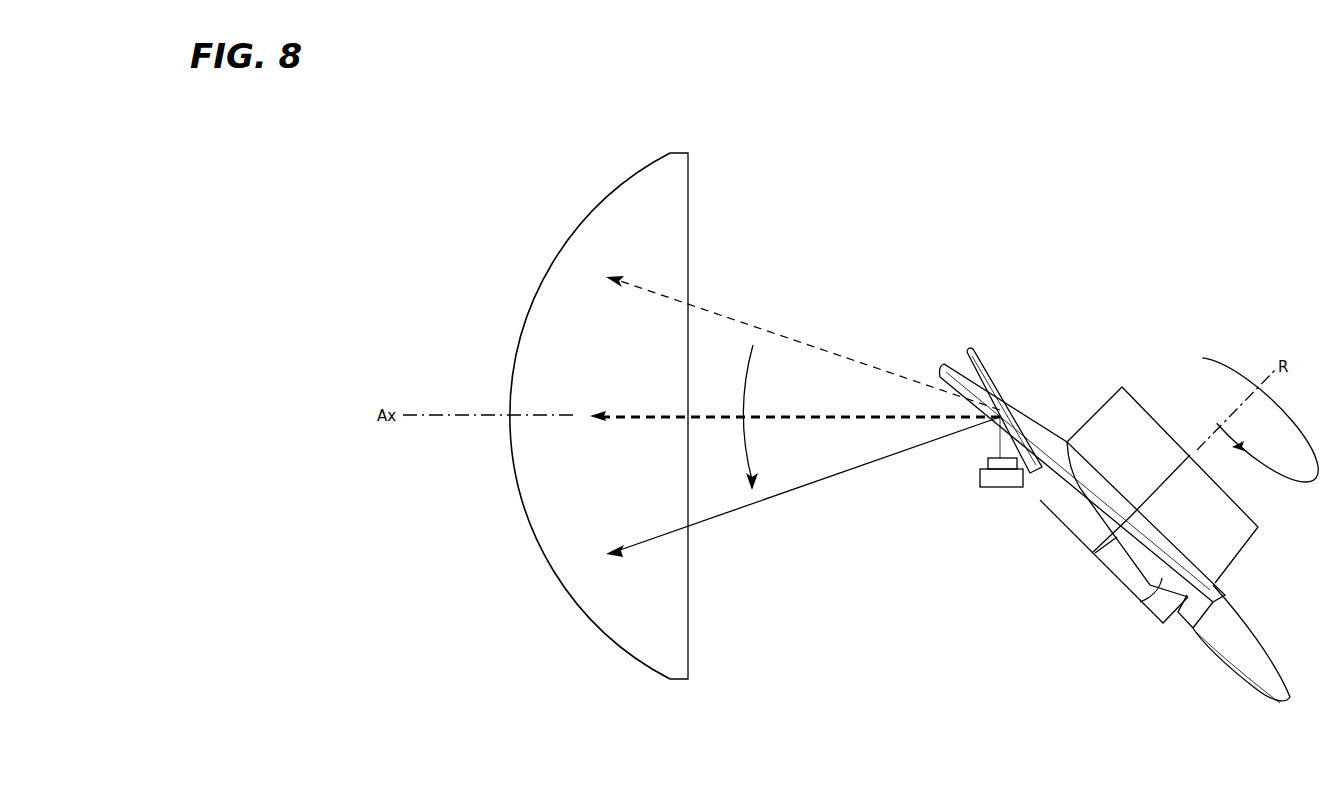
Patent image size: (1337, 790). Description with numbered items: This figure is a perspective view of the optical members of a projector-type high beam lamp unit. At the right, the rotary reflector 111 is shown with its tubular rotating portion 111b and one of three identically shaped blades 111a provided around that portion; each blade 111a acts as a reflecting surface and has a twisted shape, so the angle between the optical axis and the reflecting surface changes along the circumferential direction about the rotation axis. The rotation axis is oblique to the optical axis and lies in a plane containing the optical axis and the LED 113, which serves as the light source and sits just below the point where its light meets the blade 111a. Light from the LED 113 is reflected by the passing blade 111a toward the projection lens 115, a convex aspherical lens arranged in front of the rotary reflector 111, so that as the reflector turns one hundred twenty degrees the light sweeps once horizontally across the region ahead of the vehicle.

The rotary reflector 111 is at (1128, 541).
The blade 111a is at (1158, 614).
The tubular rotating portion 111b is at (1233, 562).
The LED 113 is at (997, 487).
The projection lens 115 is at (579, 607).